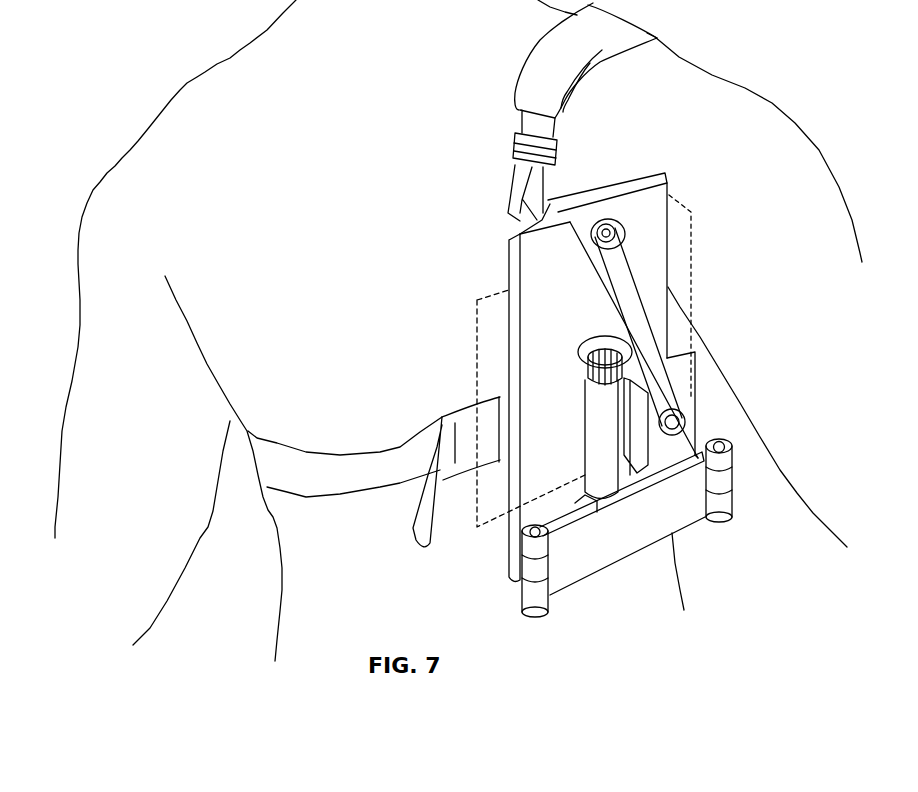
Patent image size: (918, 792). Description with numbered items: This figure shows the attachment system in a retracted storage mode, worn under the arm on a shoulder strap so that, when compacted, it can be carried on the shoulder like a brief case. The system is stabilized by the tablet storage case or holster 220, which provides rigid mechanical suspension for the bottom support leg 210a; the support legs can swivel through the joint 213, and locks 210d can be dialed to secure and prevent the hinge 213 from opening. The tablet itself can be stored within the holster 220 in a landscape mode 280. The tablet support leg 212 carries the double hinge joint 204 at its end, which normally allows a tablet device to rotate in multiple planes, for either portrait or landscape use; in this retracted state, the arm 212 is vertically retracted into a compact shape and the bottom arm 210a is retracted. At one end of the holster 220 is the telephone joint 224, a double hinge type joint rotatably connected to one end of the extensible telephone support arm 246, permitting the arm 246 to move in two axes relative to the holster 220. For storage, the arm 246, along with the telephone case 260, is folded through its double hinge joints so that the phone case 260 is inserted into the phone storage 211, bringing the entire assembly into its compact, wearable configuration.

The double hinge joint 204 is at (592, 357).
The phone storage 211 is at (689, 456).
The tablet support leg 212 is at (596, 446).
The joint 213 is at (731, 480).
The holster 220 is at (574, 254).
The telephone joint 224 is at (548, 222).
The telephone support arm 246 is at (632, 322).
The telephone case 260 is at (643, 426).
The landscape mode 280 is at (515, 408).
The support leg 210a is at (622, 523).
The lock 210d is at (634, 581).